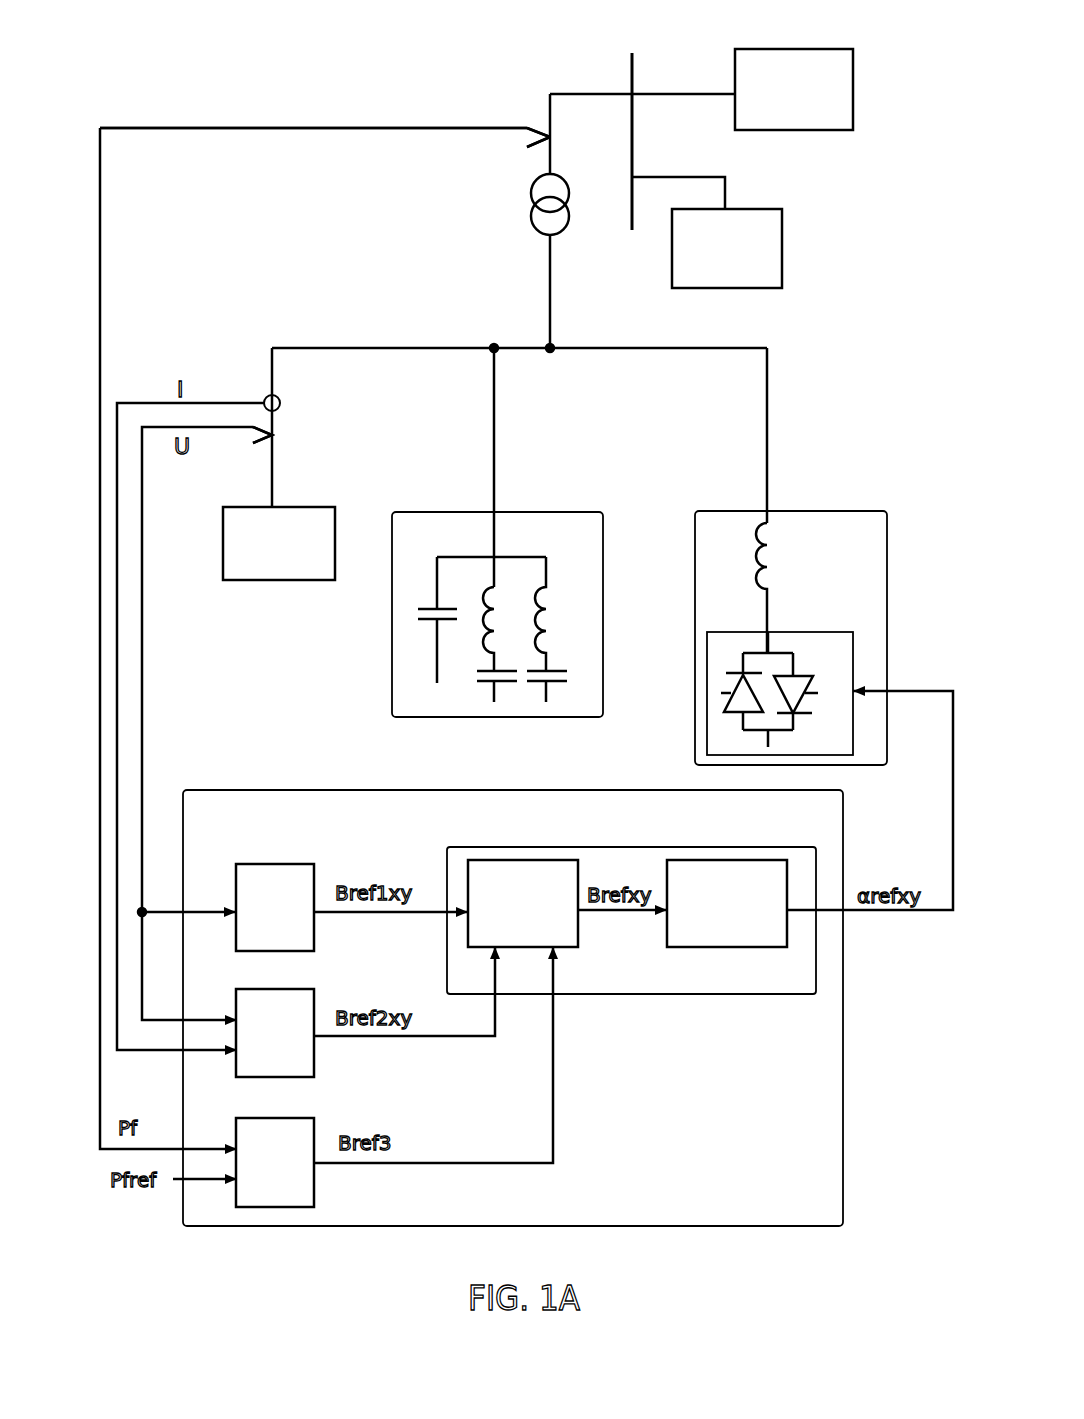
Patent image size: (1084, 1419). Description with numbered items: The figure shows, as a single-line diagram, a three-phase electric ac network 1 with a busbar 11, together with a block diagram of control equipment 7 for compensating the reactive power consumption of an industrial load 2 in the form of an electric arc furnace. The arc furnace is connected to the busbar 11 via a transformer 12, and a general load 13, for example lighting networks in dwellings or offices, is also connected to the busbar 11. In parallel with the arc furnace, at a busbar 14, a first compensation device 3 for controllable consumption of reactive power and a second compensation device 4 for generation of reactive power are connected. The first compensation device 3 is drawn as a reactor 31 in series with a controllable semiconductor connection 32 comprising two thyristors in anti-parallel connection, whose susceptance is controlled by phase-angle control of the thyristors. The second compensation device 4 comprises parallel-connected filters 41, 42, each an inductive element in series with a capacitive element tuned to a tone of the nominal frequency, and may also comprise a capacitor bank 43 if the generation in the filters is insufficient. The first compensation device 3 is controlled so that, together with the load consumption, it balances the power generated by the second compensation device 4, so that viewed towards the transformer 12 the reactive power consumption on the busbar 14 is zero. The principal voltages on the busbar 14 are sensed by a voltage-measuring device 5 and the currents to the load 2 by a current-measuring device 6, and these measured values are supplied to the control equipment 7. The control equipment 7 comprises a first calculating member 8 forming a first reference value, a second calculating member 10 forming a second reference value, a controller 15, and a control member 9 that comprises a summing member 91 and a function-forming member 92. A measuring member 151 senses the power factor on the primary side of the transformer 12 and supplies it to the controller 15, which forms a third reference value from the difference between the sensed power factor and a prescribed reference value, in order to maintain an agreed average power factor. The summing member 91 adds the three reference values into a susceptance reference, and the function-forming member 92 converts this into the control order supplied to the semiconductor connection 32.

The ac network 1 is at (762, 43).
The busbar 11 is at (632, 80).
The measuring member 151 is at (523, 127).
The transformer 12 is at (532, 222).
The general load 13 is at (783, 220).
The busbar 14 is at (338, 347).
The current-measuring device 6 is at (283, 397).
The voltage-measuring device 5 is at (282, 430).
The industrial load 2 is at (323, 507).
The second compensation device 4 is at (498, 612).
The capacitor bank 43 is at (442, 700).
The filter 42 is at (502, 705).
The filter 41 is at (547, 705).
The first compensation device 3 is at (791, 612).
The reactor 31 is at (770, 563).
The controllable semiconductor connection 32 is at (783, 632).
The control equipment 7 is at (513, 985).
The first calculating member 8 is at (295, 864).
The second calculating member 10 is at (317, 1057).
The controller 15 is at (317, 1180).
The control member 9 is at (631, 937).
The summing member 91 is at (518, 860).
The function-forming member 92 is at (678, 860).